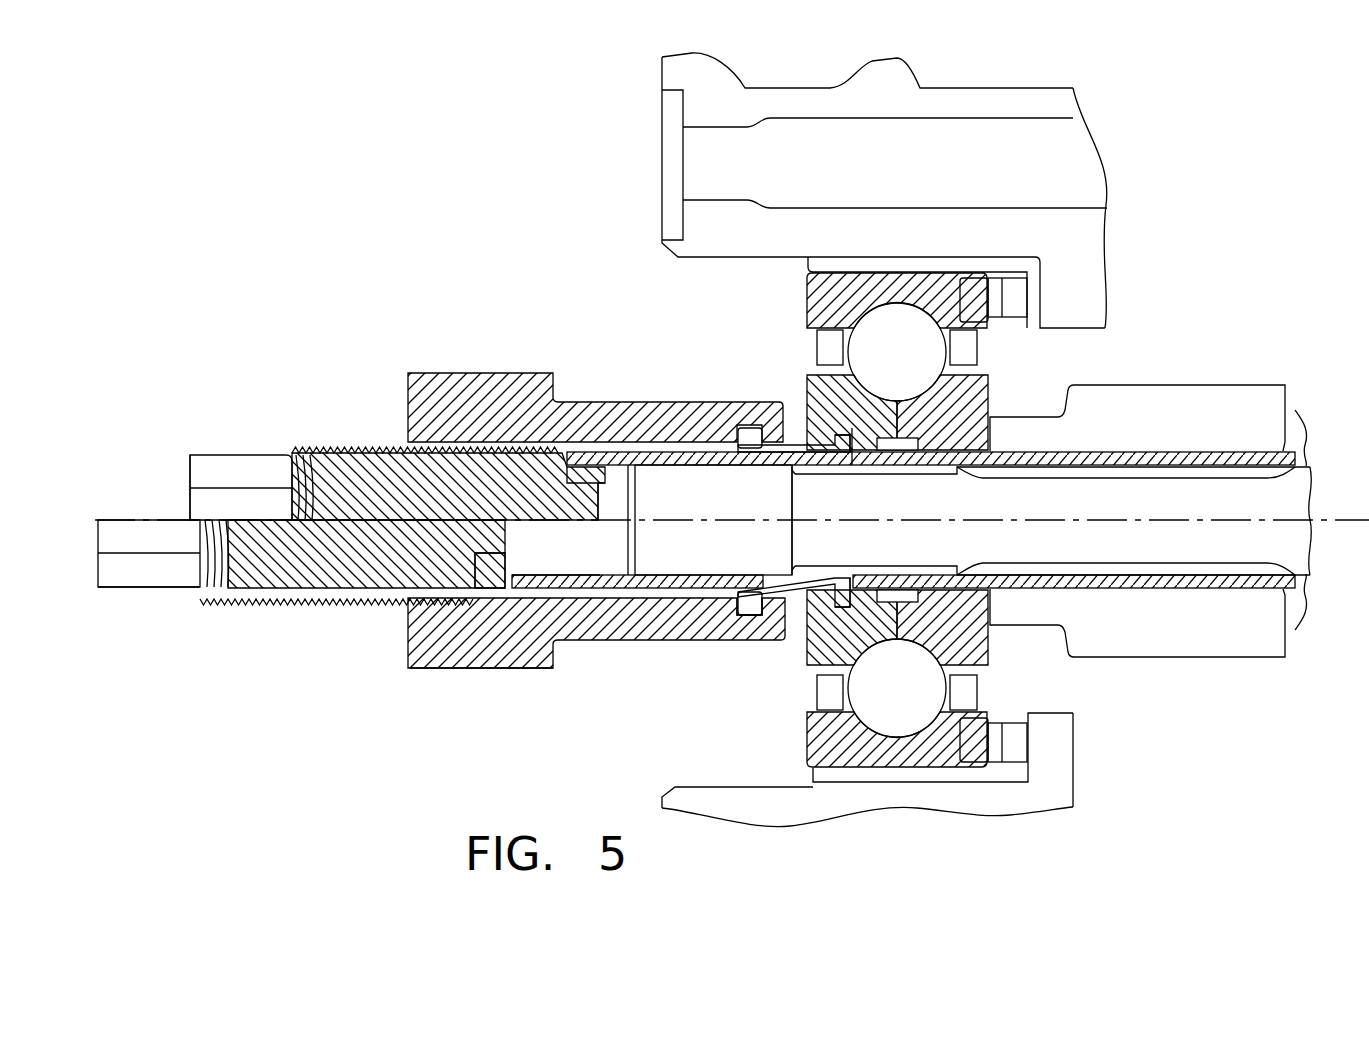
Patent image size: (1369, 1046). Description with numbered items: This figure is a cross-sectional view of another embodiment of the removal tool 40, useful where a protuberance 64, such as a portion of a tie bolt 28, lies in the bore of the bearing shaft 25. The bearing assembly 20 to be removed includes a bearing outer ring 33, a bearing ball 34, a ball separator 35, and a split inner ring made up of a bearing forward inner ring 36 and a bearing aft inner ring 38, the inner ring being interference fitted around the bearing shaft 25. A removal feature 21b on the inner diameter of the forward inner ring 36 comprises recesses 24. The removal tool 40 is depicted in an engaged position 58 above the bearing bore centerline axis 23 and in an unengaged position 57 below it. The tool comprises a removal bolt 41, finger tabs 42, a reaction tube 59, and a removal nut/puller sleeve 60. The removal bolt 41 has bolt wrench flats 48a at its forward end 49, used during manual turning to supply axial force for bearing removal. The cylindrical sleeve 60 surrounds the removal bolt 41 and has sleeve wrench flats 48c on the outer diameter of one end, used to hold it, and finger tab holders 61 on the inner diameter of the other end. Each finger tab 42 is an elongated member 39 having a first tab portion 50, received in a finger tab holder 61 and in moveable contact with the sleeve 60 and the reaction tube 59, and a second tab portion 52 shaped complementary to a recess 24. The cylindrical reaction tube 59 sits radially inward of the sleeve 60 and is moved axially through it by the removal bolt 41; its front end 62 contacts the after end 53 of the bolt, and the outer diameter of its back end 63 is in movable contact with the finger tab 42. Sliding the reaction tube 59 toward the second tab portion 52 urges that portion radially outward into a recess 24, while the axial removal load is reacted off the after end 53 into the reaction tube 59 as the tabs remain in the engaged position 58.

The bearing assembly 20 is at (1028, 678).
The removal feature 21b is at (832, 618).
The bearing bore centerline axis 23 is at (1255, 521).
The recess 24 is at (852, 466).
The bearing shaft 25 is at (1140, 593).
The tie bolt 28 is at (1087, 509).
The bearing outer ring 33 is at (843, 311).
The bearing ball 34 is at (911, 364).
The ball separator 35 is at (813, 337).
The bearing forward inner ring 36 is at (856, 418).
The bearing aft inner ring 38 is at (957, 426).
The elongated member 39 is at (793, 445).
The removal tool 40 is at (383, 432).
The removal bolt 41 is at (378, 501).
The finger tab 42 is at (807, 594).
The bolt wrench flats 48a is at (162, 565).
The sleeve wrench flats 48c is at (482, 668).
The forward end 49 is at (190, 477).
The first tab portion 50 is at (747, 423).
The second tab portion 52 is at (840, 437).
The after end 53 is at (508, 532).
The unengaged position 57 is at (157, 627).
The engaged position 58 is at (262, 352).
The reaction tube 59 is at (617, 573).
The removal nut/puller sleeve 60 is at (503, 426).
The finger tab holder 61 is at (697, 640).
The front end 62 is at (512, 562).
The back end 63 is at (757, 620).
The protuberance 64 is at (727, 564).